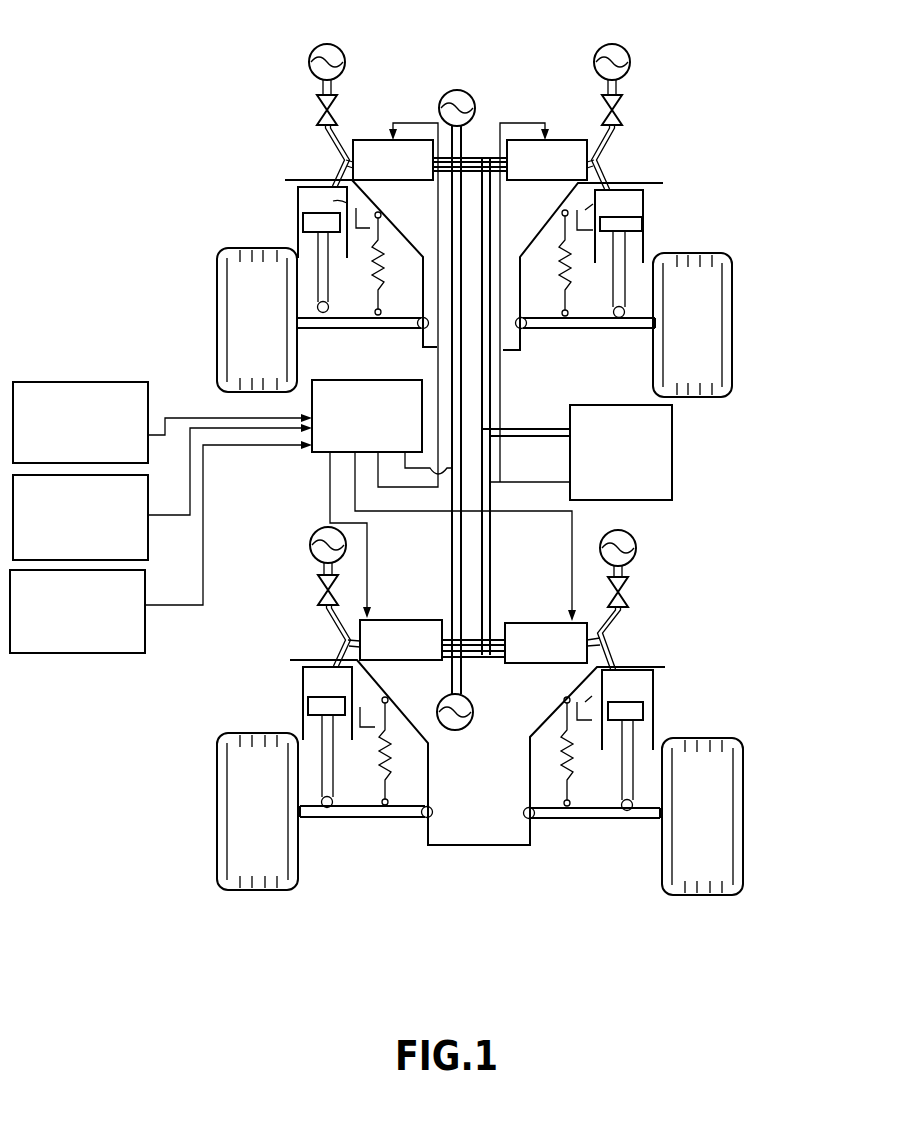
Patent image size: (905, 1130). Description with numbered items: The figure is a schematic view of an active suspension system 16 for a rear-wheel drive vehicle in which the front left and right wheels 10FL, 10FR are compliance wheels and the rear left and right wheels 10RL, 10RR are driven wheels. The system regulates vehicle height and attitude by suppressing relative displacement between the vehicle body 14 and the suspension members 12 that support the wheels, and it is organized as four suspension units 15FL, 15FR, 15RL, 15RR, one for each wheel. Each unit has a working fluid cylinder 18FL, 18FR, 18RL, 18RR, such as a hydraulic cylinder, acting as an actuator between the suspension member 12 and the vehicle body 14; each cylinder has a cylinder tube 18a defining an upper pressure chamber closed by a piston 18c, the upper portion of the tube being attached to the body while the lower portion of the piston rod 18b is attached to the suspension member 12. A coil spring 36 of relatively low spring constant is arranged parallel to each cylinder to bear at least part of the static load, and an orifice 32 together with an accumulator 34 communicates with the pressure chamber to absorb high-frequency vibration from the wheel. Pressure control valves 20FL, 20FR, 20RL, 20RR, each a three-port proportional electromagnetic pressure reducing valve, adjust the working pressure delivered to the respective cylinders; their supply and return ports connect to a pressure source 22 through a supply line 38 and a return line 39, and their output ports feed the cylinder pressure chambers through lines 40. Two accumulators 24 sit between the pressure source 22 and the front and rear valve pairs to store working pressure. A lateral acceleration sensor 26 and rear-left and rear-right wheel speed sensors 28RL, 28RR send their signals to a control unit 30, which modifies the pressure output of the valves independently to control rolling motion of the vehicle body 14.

The front left wheel 10FL is at (237, 248).
The front right wheel 10FR is at (733, 327).
The rear left wheel 10RL is at (217, 799).
The rear right wheel 10RR is at (712, 897).
The suspension member 12 is at (368, 328).
The vehicle body 14 is at (520, 352).
The front left suspension unit 15FL is at (160, 180).
The front right suspension unit 15FR is at (856, 225).
The rear left suspension unit 15RL is at (205, 705).
The rear right suspension unit 15RR is at (747, 700).
The active suspension system 16 is at (675, 476).
The front left working fluid cylinder 18FL is at (288, 201).
The front right working fluid cylinder 18FR is at (651, 198).
The rear left working fluid cylinder 18RL is at (300, 693).
The rear right working fluid cylinder 18RR is at (662, 700).
The cylinder tube 18a is at (300, 182).
The piston rod 18b is at (322, 314).
The piston 18c is at (298, 238).
The front left pressure control valve 20FL is at (378, 138).
The front right pressure control valve 20FR is at (564, 138).
The rear left pressure control valve 20RL is at (408, 619).
The rear right pressure control valve 20RR is at (535, 622).
The pressure source 22 is at (672, 436).
The accumulator 24 is at (460, 90).
The lateral acceleration sensor 26 is at (51, 380).
The rear-left wheel speed sensor 28RL is at (148, 503).
The rear-right wheel speed sensor 28RR is at (56, 655).
The control unit 30 is at (315, 452).
The orifice 32 is at (320, 100).
The accumulator 34 is at (339, 47).
The coil spring 36 is at (382, 265).
The supply line 38 is at (543, 423).
The return line 39 is at (518, 481).
The output line 40 is at (338, 160).